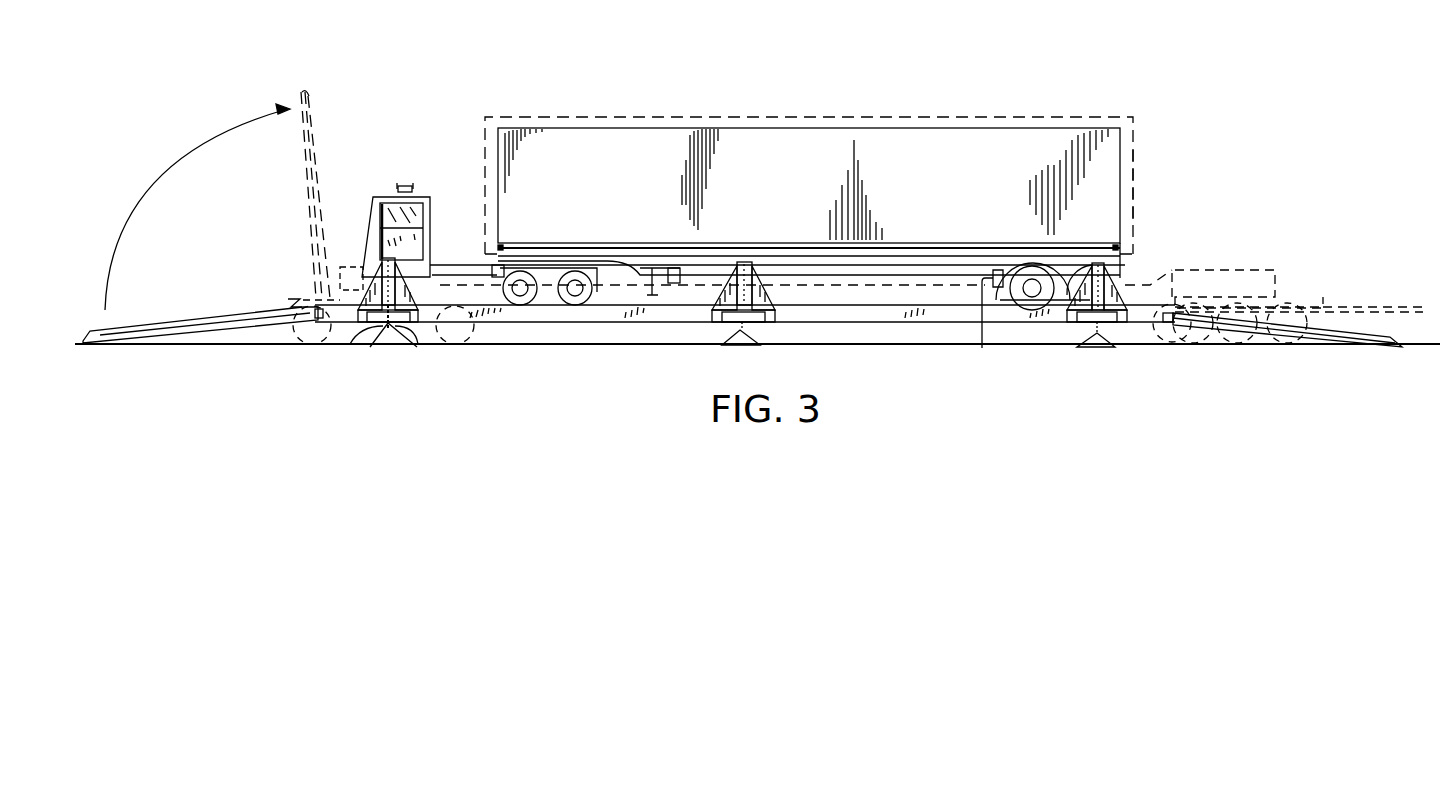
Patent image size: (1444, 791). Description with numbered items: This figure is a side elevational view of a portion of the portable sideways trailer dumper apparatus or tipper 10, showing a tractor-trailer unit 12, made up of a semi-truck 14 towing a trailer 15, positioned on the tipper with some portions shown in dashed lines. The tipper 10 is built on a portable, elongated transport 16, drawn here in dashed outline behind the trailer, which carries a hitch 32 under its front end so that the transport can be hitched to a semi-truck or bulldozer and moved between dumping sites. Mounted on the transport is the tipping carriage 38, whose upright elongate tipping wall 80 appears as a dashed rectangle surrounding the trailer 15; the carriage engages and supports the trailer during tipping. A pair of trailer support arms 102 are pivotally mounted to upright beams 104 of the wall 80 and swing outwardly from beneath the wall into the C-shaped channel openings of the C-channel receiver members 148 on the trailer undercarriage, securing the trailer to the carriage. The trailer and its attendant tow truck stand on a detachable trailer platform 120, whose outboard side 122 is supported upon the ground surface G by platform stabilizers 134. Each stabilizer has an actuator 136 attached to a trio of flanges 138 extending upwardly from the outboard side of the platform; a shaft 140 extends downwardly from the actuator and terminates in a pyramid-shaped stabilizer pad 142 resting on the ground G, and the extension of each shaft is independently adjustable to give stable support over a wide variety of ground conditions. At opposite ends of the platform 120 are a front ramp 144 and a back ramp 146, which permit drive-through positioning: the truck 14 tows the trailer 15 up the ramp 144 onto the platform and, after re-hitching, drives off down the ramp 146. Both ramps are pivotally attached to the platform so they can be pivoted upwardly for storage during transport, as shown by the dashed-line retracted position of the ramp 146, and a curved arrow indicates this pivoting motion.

The tipper 10 is at (228, 412).
The tractor-trailer unit 12 is at (801, 175).
The semi-truck 14 is at (428, 197).
The trailer 15 is at (1000, 128).
The transport 16 is at (1198, 270).
The hitch 32 is at (1350, 307).
The tipping carriage 38 is at (1137, 183).
The tipping wall 80 is at (1077, 117).
The trailer support arms 102 is at (678, 280).
The upright beams 104 is at (992, 325).
The trailer platform 120 is at (742, 347).
The outboard side 122 is at (567, 313).
The platform stabilizer 134 is at (387, 350).
The actuator 136 is at (387, 283).
The flanges 138 is at (417, 290).
The shaft 140 is at (387, 327).
The stabilizer pad 142 is at (347, 330).
The front ramp 144 is at (1370, 333).
The back ramp 146 is at (318, 160).
The C-channel receiver members 148 is at (683, 268).
The ground surface G is at (1040, 346).